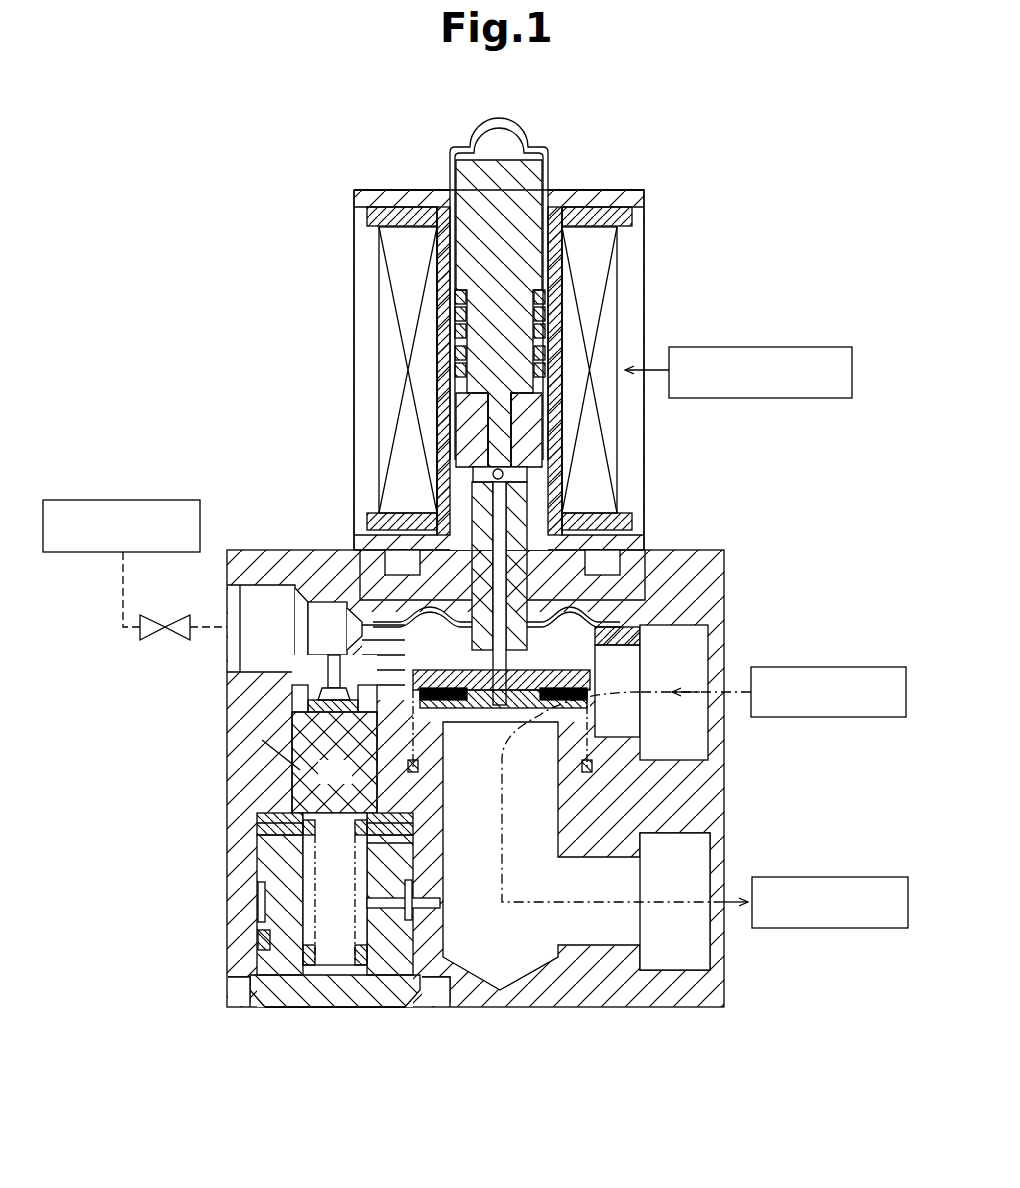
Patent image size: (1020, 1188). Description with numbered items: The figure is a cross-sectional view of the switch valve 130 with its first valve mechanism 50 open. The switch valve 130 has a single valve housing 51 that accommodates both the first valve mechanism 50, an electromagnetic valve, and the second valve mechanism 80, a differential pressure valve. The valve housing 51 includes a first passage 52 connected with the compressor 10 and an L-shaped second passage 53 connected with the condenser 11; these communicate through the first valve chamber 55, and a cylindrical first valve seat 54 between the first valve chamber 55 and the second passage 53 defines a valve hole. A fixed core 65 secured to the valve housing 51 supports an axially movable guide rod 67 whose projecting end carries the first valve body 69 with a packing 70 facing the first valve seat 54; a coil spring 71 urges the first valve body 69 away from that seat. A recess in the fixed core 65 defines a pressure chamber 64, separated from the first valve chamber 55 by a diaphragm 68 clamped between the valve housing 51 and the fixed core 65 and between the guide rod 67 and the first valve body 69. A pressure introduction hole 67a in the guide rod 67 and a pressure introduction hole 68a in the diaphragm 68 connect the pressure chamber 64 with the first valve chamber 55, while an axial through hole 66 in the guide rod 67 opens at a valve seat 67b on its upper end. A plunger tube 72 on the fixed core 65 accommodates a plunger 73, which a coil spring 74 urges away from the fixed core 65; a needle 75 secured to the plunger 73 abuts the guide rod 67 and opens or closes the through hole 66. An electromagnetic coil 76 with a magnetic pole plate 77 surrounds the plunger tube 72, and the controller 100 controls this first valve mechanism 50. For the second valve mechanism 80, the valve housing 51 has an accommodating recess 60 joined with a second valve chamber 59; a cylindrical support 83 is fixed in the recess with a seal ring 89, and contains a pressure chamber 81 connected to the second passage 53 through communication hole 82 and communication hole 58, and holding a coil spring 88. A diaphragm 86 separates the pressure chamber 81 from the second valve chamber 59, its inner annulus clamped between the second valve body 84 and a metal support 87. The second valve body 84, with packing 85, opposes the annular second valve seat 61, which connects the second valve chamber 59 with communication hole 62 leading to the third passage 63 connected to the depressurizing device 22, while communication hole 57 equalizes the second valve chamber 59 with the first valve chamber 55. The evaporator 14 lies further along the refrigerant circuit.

The switch valve 130 is at (350, 160).
The first valve mechanism 50 is at (355, 205).
The valve housing 51 is at (705, 1010).
The first passage 52 is at (690, 745).
The second passage 53 is at (690, 852).
The first valve seat 54 is at (562, 735).
The first valve chamber 55 is at (405, 672).
The communication hole 57 is at (405, 760).
The communication hole 58 is at (440, 903).
The second valve chamber 59 is at (300, 705).
The accommodating recess 60 is at (262, 900).
The second valve seat 61 is at (292, 745).
The communication hole 62 is at (334, 657).
The third passage 63 is at (250, 600).
The pressure chamber 64 is at (470, 596).
The fixed core 65 is at (455, 430).
The through hole 66 is at (508, 586).
The guide rod 67 is at (530, 506).
The pressure introduction hole 67a is at (645, 608).
The valve seat 67b is at (478, 473).
The diaphragm 68 is at (626, 640).
The pressure introduction hole 68a is at (574, 632).
The first valve body 69 is at (448, 672).
The packing 70 is at (452, 700).
The coil spring 71 is at (607, 672).
The plunger tube 72 is at (549, 170).
The plunger 73 is at (456, 178).
The coil spring 74 is at (445, 300).
The needle 75 is at (498, 358).
The electromagnetic coil 76 is at (400, 270).
The magnetic pole plate 77 is at (645, 192).
The second valve mechanism 80 is at (385, 985).
The pressure chamber 81 is at (375, 845).
The communication hole 82 is at (365, 870).
The cylindrical support 83 is at (285, 880).
The second valve body 84 is at (300, 770).
The packing 85 is at (334, 762).
The diaphragm 86 is at (292, 812).
The metal support 87 is at (280, 822).
The coil spring 88 is at (335, 985).
The seal ring 89 is at (265, 940).
The controller 100 is at (828, 400).
The compressor 10 is at (880, 720).
The condenser 11 is at (880, 930).
The evaporator 14 is at (72, 554).
The depressurizing device 22 is at (152, 642).